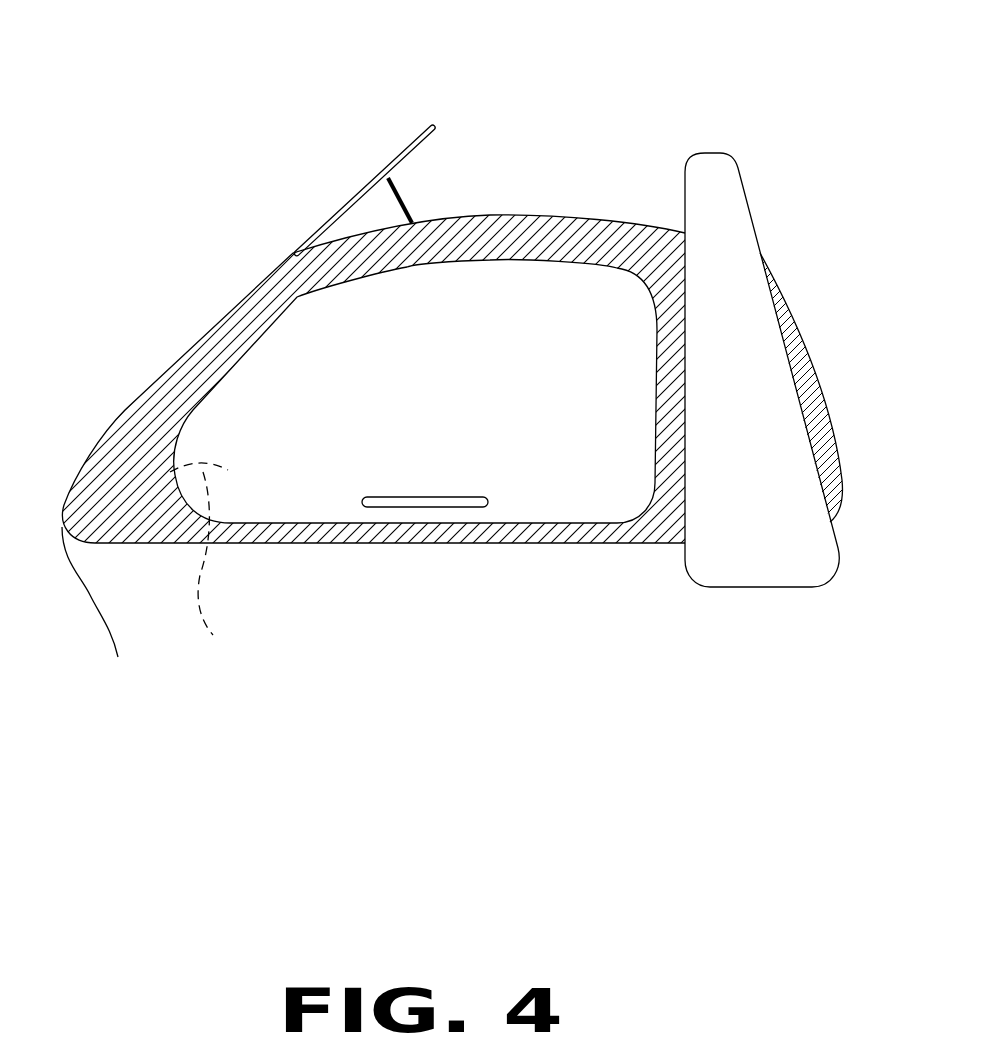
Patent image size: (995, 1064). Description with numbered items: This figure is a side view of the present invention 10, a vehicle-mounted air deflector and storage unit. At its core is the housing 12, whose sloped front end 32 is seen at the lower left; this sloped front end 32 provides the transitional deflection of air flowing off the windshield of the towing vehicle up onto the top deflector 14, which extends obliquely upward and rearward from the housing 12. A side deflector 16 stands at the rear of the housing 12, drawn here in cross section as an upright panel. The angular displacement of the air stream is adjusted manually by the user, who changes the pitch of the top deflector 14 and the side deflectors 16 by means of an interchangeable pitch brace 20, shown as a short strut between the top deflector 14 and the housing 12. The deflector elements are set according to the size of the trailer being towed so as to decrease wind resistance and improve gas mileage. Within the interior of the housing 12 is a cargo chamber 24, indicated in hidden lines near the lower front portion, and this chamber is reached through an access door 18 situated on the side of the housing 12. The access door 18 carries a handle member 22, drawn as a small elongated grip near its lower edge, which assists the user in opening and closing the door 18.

The present invention 10 is at (805, 127).
The housing 12 is at (517, 543).
The top deflector 14 is at (440, 120).
The side deflector 16 is at (770, 587).
The access door 18 is at (320, 313).
The interchangeable pitch brace 20 is at (403, 198).
The handle member 22 is at (417, 505).
The cargo chamber 24 is at (205, 570).
The sloped front end 32 is at (96, 619).